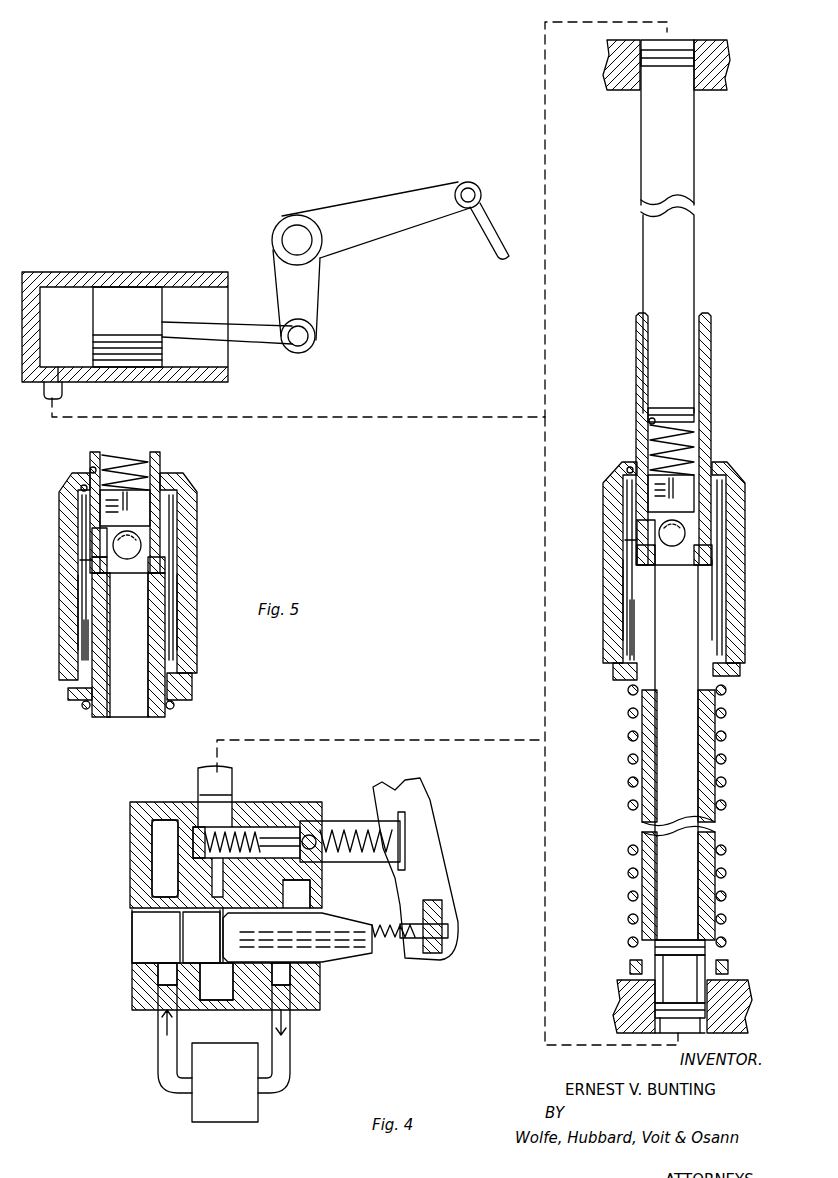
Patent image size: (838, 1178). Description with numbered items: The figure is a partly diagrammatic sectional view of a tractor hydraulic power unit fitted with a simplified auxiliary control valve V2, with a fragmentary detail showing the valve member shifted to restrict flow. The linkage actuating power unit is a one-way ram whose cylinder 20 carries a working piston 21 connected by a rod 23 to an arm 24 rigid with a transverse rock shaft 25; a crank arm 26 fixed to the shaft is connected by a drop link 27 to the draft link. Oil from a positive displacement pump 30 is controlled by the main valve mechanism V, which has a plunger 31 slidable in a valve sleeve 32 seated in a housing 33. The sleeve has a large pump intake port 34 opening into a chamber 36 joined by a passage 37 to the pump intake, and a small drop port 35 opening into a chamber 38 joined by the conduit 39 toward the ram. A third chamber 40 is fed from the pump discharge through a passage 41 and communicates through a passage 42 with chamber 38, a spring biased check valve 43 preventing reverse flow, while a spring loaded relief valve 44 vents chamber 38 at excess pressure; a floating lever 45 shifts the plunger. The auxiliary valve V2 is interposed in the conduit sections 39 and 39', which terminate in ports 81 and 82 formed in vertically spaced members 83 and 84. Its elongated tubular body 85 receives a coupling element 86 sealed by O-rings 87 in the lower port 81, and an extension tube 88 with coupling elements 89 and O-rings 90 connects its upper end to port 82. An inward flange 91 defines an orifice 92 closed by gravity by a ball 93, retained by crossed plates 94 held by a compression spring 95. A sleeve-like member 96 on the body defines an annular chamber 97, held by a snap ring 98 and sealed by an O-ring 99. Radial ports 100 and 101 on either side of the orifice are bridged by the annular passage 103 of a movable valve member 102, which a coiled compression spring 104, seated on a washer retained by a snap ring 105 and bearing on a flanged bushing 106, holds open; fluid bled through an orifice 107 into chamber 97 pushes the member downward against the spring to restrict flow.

In FIG. 4, the cylinder 20 is at (94, 275).
In FIG. 4, the working piston 21 is at (140, 295).
In FIG. 4, the rod 23 is at (262, 344).
In FIG. 4, the arm 24 is at (310, 288).
In FIG. 4, the rock shaft 25 is at (294, 232).
In FIG. 4, the crank arm 26 is at (379, 208).
In FIG. 4, the drop link 27 is at (486, 236).
In FIG. 4, the supply conduit section 39' is at (74, 388).
In FIG. 4, the pump 30 is at (225, 1122).
In FIG. 4, the plunger 31 is at (340, 955).
In FIG. 4, the valve sleeve 32 is at (150, 972).
In FIG. 4, the housing 33 is at (132, 828).
In FIG. 4, the port 34 is at (290, 990).
In FIG. 4, the port 35 is at (210, 962).
In FIG. 4, the chamber 36 is at (310, 890).
In FIG. 4, the passage 37 is at (290, 1057).
In FIG. 4, the chamber 38 is at (222, 1000).
In FIG. 4, the conduit 39 is at (234, 779).
In FIG. 4, the chamber 40 is at (152, 882).
In FIG. 4, the passage 41 is at (155, 1042).
In FIG. 4, the passage 42 is at (190, 850).
In FIG. 4, the check valve 43 is at (165, 822).
In FIG. 4, the relief valve 44 is at (318, 822).
In FIG. 4, the floating lever 45 is at (432, 878).
In FIG. 4, the valve mechanism V is at (122, 952).
In FIG. 4, the port 81 is at (690, 1035).
In FIG. 4, the port 82 is at (686, 40).
In FIG. 4, the member 83 is at (740, 996).
In FIG. 4, the member 84 is at (727, 72).
In FIG. 4, the tubular body 85 is at (716, 826).
In FIG. 4, the coupling element 86 is at (655, 982).
In FIG. 4, the O-ring 87 is at (706, 946).
In FIG. 4, the extension tube 88 is at (694, 225).
In FIG. 4, the coupling element 89 is at (641, 55).
In FIG. 4, the O-ring 90 is at (612, 86).
In FIG. 4, the flange 91 is at (652, 566).
In FIG. 5, the flange 91 is at (110, 578).
In FIG. 4, the orifice 92 is at (700, 556).
In FIG. 5, the orifice 92 is at (153, 565).
In FIG. 4, the ball 93 is at (684, 536).
In FIG. 5, the ball 93 is at (138, 545).
In FIG. 4, the crossed plates 94 is at (660, 500).
In FIG. 5, the crossed plates 94 is at (148, 506).
In FIG. 4, the compression spring 95 is at (698, 448).
In FIG. 5, the compression spring 95 is at (150, 466).
In FIG. 4, the sleeve-like member 96 is at (740, 640).
In FIG. 5, the sleeve-like member 96 is at (192, 672).
In FIG. 4, the annular chamber 97 is at (736, 478).
In FIG. 4, the snap ring 98 is at (640, 460).
In FIG. 5, the snap ring 98 is at (90, 470).
In FIG. 4, the O-ring 99 is at (628, 468).
In FIG. 5, the O-ring 99 is at (84, 488).
In FIG. 4, the radial port 100 is at (637, 526).
In FIG. 5, the radial port 100 is at (95, 540).
In FIG. 4, the radial port 101 is at (632, 610).
In FIG. 5, the radial port 101 is at (88, 612).
In FIG. 4, the movable valve member 102 is at (628, 570).
In FIG. 5, the movable valve member 102 is at (84, 598).
In FIG. 4, the annular passage 103 is at (630, 544).
In FIG. 5, the annular passage 103 is at (86, 562).
In FIG. 4, the coiled compression spring 104 is at (726, 758).
In FIG. 5, the coiled compression spring 104 is at (82, 710).
In FIG. 4, the snap ring 105 is at (630, 968).
In FIG. 4, the flanged bushing 106 is at (622, 680).
In FIG. 5, the flanged bushing 106 is at (68, 694).
In FIG. 4, the orifice 107 is at (716, 568).
In FIG. 5, the orifice 107 is at (172, 590).
In FIG. 4, the auxiliary control valve V2 is at (594, 604).
In FIG. 5, the auxiliary control valve V2 is at (206, 642).